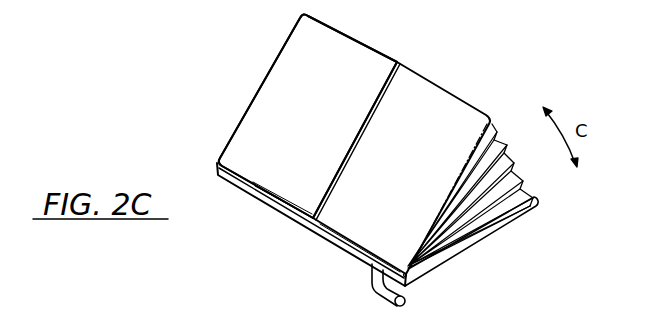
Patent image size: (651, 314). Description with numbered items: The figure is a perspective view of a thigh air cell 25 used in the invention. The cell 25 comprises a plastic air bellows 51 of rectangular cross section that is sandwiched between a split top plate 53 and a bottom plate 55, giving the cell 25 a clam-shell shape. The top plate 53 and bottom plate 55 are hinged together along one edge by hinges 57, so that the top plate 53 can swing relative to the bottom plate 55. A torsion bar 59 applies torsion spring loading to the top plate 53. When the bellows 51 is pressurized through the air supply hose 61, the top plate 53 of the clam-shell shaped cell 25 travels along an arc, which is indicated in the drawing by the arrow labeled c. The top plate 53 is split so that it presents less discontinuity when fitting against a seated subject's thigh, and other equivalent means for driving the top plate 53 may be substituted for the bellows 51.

The thigh air cell 25 is at (228, 116).
The plastic air bellows 51 is at (507, 147).
The split top plate 53 is at (352, 88).
The bottom plate 55 is at (503, 222).
The hinges 57 is at (320, 230).
The torsion bar 59 is at (468, 240).
The air supply hose 61 is at (367, 288).